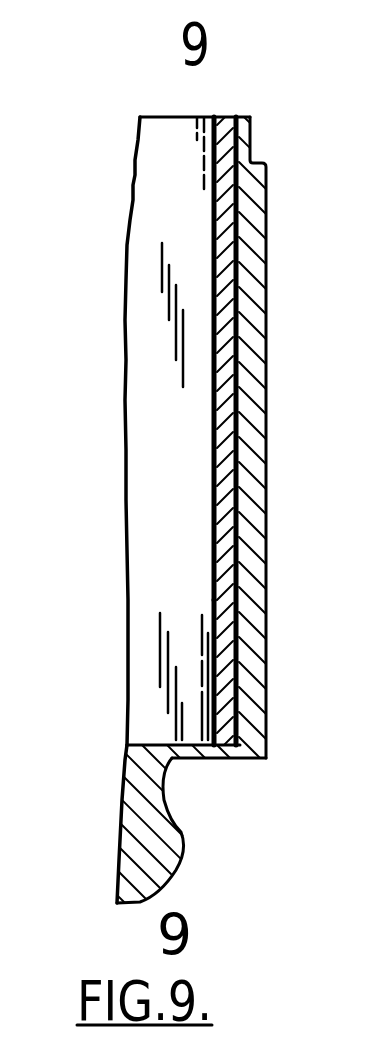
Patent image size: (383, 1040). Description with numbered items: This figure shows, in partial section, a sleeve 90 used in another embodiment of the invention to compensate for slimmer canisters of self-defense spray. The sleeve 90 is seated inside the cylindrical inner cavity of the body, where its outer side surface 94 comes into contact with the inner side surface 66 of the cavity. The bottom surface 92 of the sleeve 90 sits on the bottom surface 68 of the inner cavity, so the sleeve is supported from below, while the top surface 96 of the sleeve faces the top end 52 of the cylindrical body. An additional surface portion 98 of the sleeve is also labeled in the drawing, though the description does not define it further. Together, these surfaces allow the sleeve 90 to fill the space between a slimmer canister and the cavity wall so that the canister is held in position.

The top end 52 is at (180, 110).
The top surface of the sleeve 96 is at (220, 117).
The inner side surface 66 is at (238, 378).
The outer side surface of the sleeve 94 is at (236, 659).
The sleeve 90 is at (185, 630).
The lower wall portion 98 is at (212, 690).
The bottom surface 68 is at (153, 742).
The bottom surface of the sleeve 92 is at (232, 756).